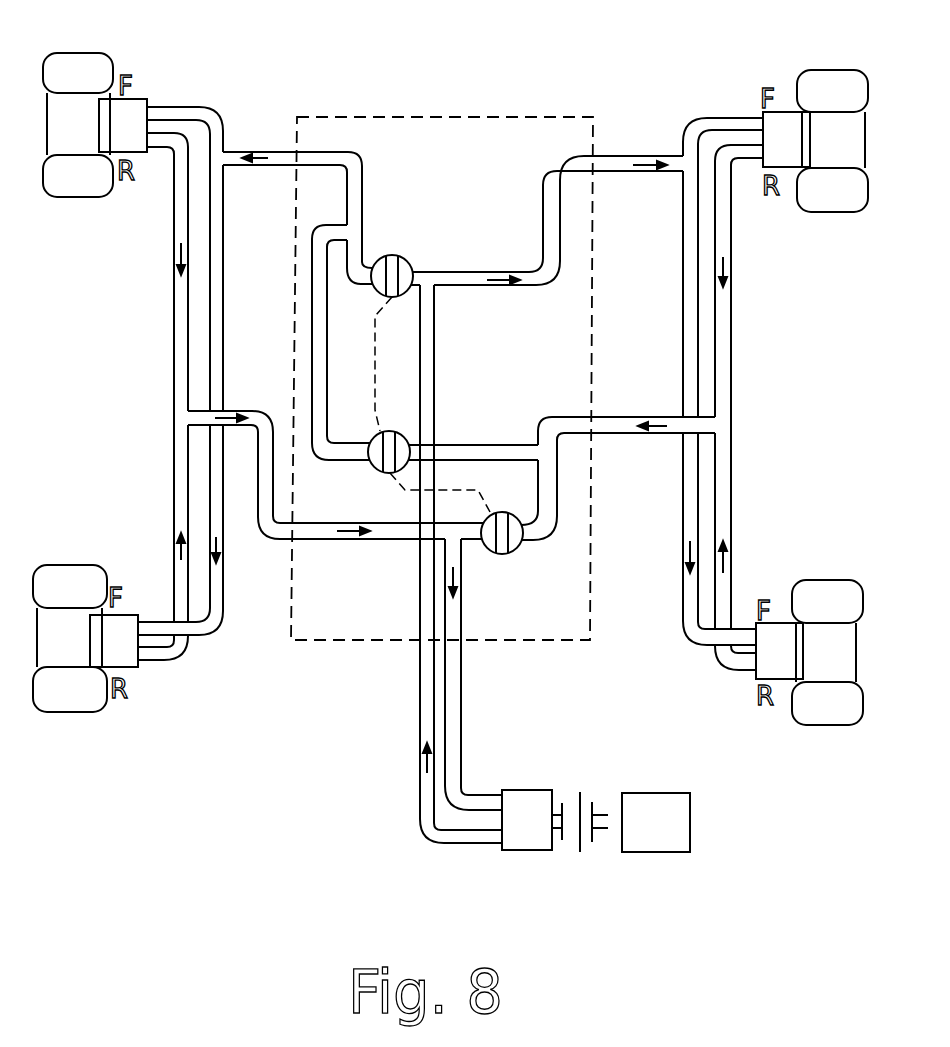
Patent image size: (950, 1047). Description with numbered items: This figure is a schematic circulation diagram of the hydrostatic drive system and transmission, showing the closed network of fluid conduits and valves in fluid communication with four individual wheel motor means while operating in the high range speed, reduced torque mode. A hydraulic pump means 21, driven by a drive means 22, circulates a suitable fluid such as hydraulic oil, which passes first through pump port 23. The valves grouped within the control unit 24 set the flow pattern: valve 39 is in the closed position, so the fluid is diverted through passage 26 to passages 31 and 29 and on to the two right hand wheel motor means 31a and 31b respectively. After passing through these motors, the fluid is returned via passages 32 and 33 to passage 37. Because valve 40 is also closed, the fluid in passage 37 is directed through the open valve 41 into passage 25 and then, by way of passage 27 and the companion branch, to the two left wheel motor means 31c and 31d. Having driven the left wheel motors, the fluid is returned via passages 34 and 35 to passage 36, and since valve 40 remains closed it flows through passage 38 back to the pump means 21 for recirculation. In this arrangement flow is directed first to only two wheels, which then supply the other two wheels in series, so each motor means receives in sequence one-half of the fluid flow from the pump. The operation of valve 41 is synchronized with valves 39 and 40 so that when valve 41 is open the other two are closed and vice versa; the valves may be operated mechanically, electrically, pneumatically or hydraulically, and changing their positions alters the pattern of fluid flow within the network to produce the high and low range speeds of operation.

The pump means 21 is at (527, 852).
The drive means 22 is at (657, 852).
The pump port 23 is at (473, 843).
The hydraulic control unit 24 is at (343, 640).
The passage 25 is at (200, 110).
The passage 26 is at (662, 158).
The passage 27 is at (222, 292).
The passage 29 is at (683, 310).
The passage 31 is at (725, 118).
The wheel motor means 31a is at (787, 122).
The wheel motor means 31b is at (783, 655).
The wheel motor means 31c is at (140, 115).
The wheel motor means 31d is at (125, 653).
The passage 32 is at (733, 307).
The passage 33 is at (728, 559).
The passage 34 is at (173, 295).
The passage 35 is at (172, 550).
The passage 36 is at (228, 410).
The passage 37 is at (667, 417).
The passage 38 is at (477, 795).
The valve 39 is at (408, 257).
The valve 40 is at (513, 552).
The valve 41 is at (377, 473).